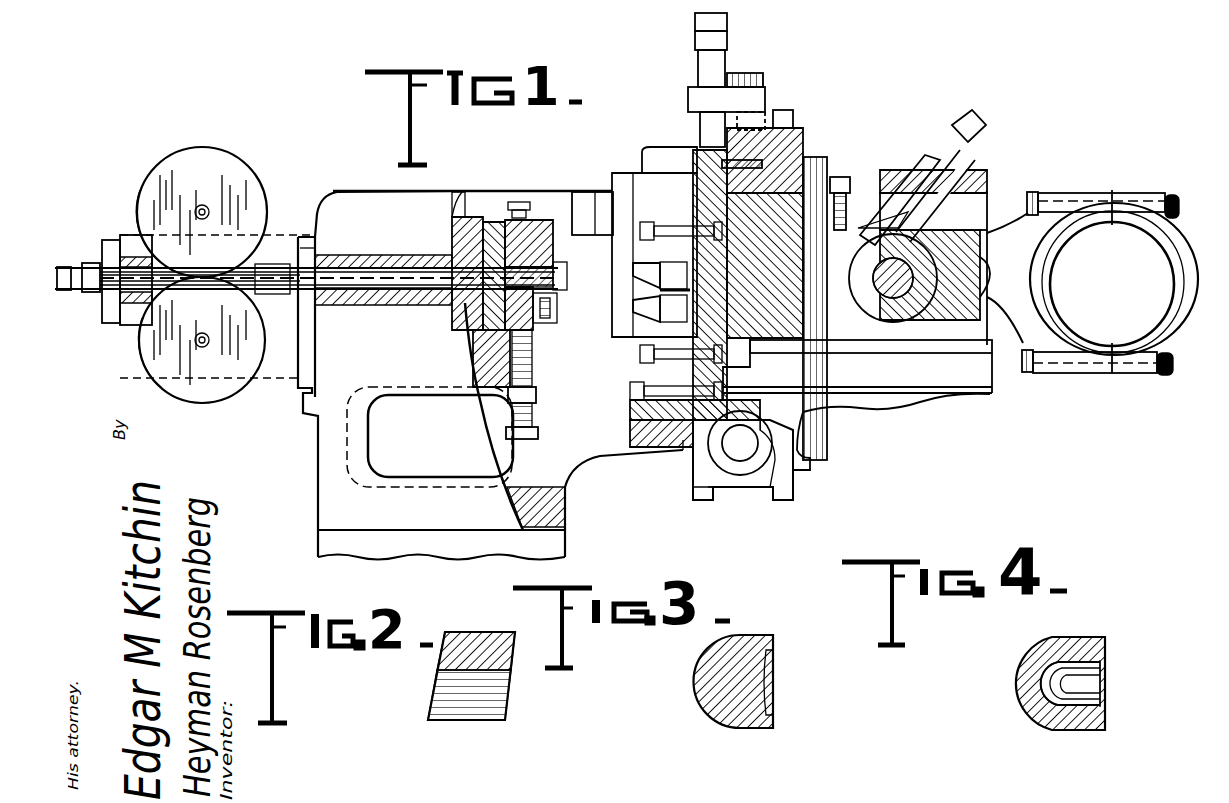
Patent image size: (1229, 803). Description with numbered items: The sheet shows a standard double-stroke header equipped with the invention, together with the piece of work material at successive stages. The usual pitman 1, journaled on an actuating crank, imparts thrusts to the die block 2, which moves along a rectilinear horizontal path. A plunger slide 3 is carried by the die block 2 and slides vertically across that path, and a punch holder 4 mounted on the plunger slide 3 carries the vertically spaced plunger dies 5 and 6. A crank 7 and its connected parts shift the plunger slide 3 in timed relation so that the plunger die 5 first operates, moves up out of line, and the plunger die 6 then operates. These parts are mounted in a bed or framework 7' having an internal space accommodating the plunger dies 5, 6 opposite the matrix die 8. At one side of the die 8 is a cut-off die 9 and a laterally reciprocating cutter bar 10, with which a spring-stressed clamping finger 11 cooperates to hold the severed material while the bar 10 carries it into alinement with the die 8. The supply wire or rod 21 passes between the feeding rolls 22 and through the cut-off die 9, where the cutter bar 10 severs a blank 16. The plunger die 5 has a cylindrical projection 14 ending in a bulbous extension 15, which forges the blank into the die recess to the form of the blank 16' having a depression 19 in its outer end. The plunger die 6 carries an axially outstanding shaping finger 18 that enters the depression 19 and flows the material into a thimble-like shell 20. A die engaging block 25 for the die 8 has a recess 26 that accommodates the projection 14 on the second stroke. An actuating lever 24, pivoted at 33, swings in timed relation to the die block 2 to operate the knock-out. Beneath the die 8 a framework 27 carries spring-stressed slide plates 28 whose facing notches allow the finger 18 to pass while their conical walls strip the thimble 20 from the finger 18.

In FIG. 1, the pitman 1 is at (1027, 352).
In FIG. 1, the die block 2 is at (780, 320).
In FIG. 1, the plunger slide 3 is at (748, 362).
In FIG. 1, the punch holder 4 is at (655, 226).
In FIG. 1, the plunger die 5 is at (640, 270).
In FIG. 1, the plunger die 6 is at (640, 335).
In FIG. 1, the crank 7 is at (726, 457).
In FIG. 1, the bed or framework 7' is at (555, 375).
In FIG. 1, the matrix die 8 is at (540, 240).
In FIG. 1, the cut-off die 9 is at (560, 305).
In FIG. 1, the cutter bar 10 is at (575, 265).
In FIG. 1, the clamping finger 11 is at (612, 298).
In FIG. 1, the projection 14 is at (612, 270).
In FIG. 1, the bulbous extension 15 is at (612, 285).
In FIG. 2, the blank 16 is at (471, 692).
In FIG. 3, the blank 16' is at (734, 695).
In FIG. 1, the shaping finger 18 is at (614, 320).
In FIG. 3, the depression 19 is at (774, 682).
In FIG. 4, the thimble-like shell 20 is at (1045, 732).
In FIG. 1, the supply wire or rod 21 is at (302, 292).
In FIG. 1, the feeding rolls 22 is at (145, 206).
In FIG. 1, the actuating lever 24 is at (270, 290).
In FIG. 1, the die engaging block 25 is at (508, 216).
In FIG. 1, the recess 26 is at (572, 235).
In FIG. 1, the framework 27 is at (536, 338).
In FIG. 1, the slide plates 28 is at (560, 345).
In FIG. 1, the pivot 33 is at (300, 268).